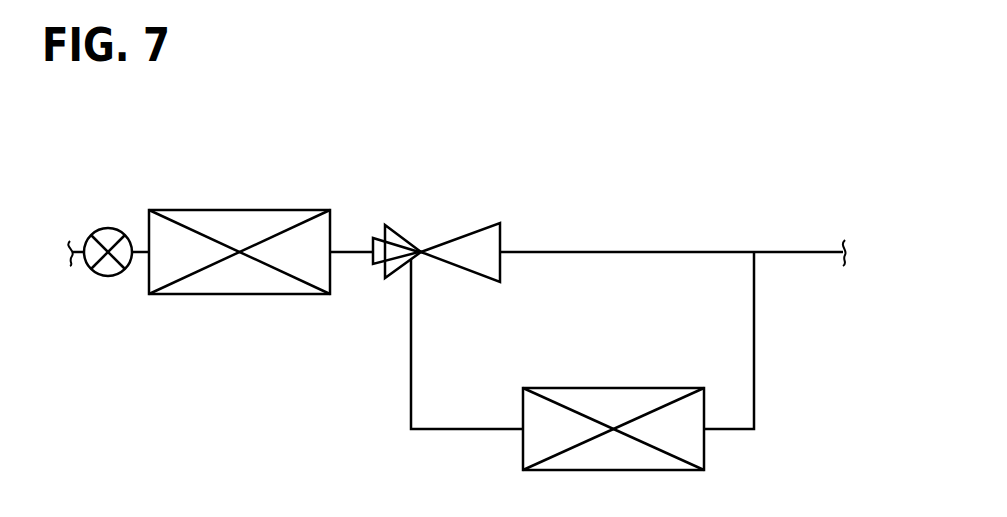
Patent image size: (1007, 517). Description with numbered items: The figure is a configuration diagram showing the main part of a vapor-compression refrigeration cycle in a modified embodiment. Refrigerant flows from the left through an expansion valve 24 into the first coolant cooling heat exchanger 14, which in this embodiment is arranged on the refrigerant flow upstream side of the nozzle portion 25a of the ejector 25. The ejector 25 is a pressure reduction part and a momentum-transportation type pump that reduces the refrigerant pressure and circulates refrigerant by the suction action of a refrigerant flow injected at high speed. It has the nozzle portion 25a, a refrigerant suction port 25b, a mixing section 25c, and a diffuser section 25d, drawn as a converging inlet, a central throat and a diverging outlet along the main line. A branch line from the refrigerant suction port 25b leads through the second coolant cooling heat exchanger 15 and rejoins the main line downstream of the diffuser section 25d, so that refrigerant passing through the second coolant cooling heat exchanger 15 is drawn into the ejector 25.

The expansion valve 24 is at (104, 228).
The first coolant cooling heat exchanger 14 is at (242, 209).
The ejector 25 is at (449, 243).
The nozzle portion 25a is at (420, 245).
The refrigerant suction port 25b is at (408, 270).
The mixing section 25c is at (425, 245).
The diffuser section 25d is at (493, 250).
The second coolant cooling heat exchanger 15 is at (523, 447).